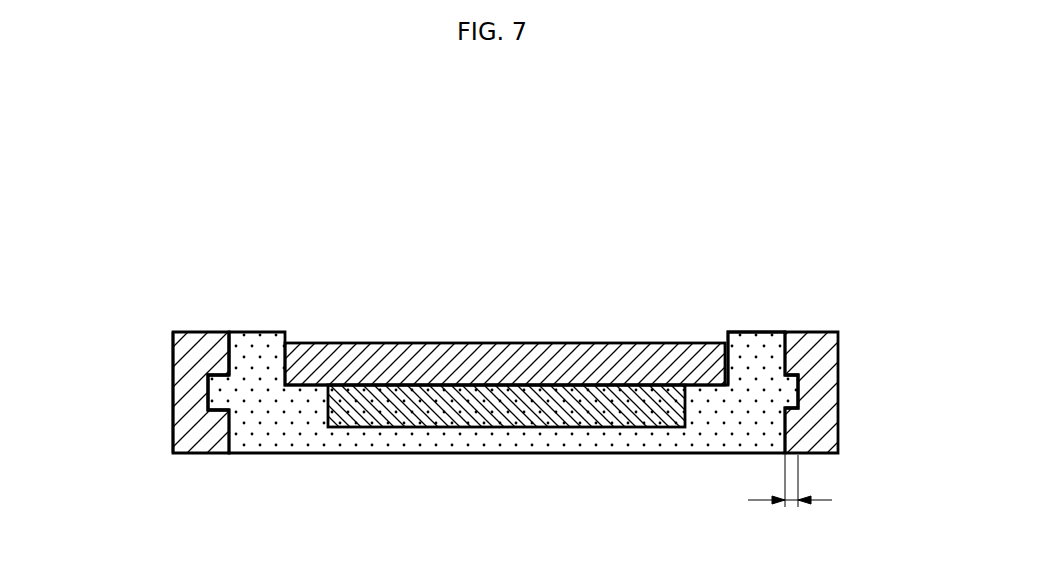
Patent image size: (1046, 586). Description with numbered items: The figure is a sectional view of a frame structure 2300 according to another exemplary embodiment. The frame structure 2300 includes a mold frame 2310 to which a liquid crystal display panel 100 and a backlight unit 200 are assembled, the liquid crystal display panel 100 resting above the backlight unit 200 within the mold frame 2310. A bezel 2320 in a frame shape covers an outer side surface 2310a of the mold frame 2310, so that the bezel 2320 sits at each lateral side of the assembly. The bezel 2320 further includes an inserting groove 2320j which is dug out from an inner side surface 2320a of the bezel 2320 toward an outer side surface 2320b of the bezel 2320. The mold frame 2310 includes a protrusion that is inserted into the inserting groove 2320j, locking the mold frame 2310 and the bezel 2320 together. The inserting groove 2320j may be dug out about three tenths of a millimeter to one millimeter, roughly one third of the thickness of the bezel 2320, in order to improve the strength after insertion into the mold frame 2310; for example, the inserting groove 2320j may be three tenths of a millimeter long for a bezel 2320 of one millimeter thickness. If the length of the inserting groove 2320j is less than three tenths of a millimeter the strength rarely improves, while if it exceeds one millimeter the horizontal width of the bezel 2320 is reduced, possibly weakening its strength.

The frame structure 2300 is at (707, 261).
The mold frame 2310 is at (257, 331).
The outer side surface 2310a is at (778, 343).
The bezel 2320 is at (198, 331).
The inner side surface 2320a is at (225, 352).
The outer side surface 2320b is at (171, 382).
The inserting groove 2320j is at (230, 397).
The liquid crystal display panel 100 is at (535, 357).
The backlight unit 200 is at (508, 410).